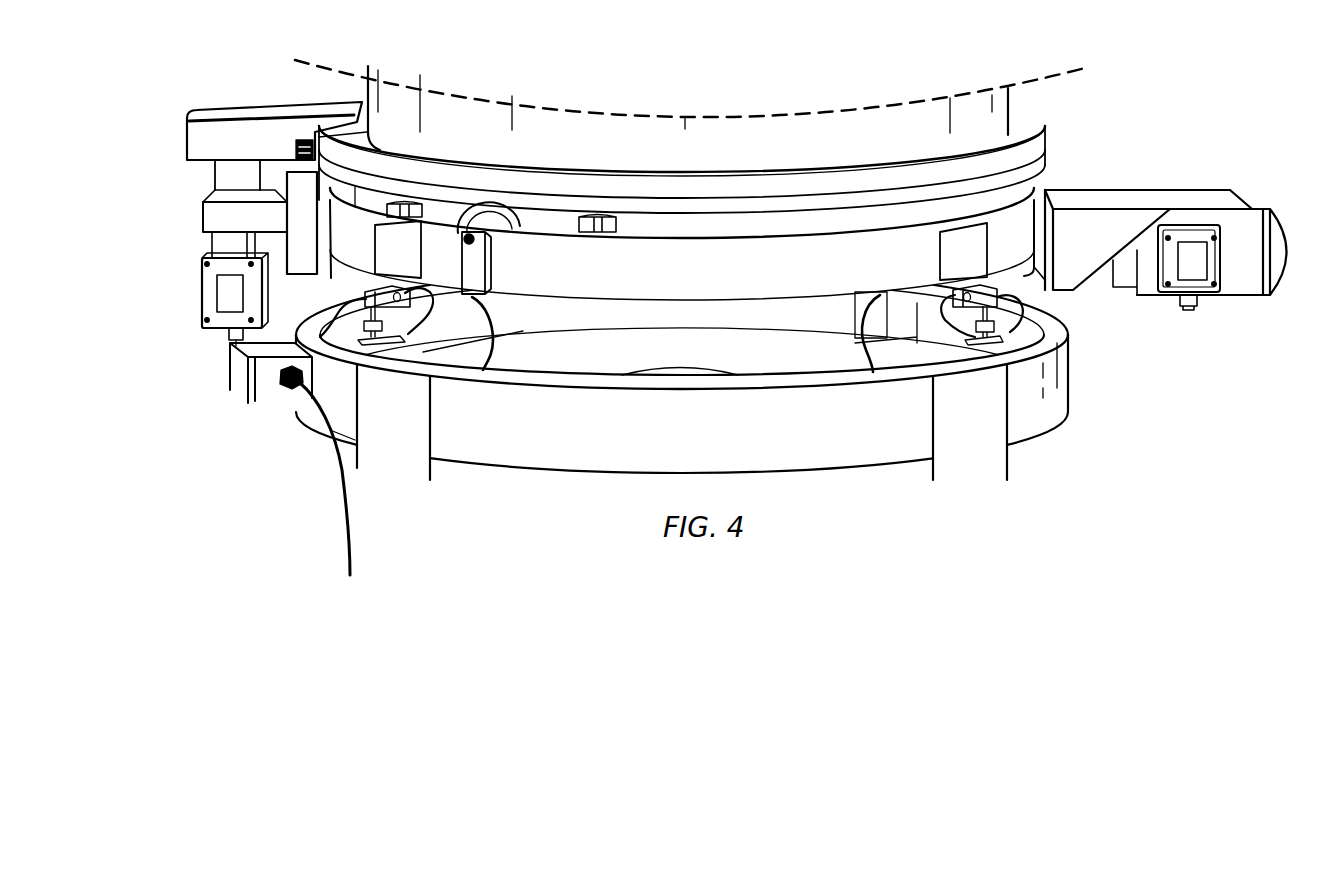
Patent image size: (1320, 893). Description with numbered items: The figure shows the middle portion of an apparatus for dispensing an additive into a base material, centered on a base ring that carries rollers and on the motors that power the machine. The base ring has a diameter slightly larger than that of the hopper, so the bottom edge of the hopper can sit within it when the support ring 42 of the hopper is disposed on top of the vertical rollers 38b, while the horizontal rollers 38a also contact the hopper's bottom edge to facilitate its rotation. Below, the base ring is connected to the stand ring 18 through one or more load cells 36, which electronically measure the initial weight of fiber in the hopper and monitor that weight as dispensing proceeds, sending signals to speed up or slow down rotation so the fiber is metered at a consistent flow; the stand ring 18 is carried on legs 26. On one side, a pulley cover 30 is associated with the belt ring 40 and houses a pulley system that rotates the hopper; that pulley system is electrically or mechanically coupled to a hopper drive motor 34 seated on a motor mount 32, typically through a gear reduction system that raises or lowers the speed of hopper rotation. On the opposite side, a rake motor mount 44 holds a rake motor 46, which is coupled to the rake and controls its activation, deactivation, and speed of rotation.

The stand ring 18 is at (518, 438).
The support legs 26 is at (394, 423).
The pulley cover 30 is at (240, 110).
The motor mount 32 is at (298, 208).
The hopper drive motor 34 is at (207, 290).
The load cells 36 is at (392, 304).
The horizontal rollers 38a is at (425, 203).
The vertical rollers 38b is at (487, 213).
The belt ring 40 is at (793, 186).
The support ring 42 is at (1018, 171).
The rake motor mount 44 is at (1112, 201).
The rake motor 46 is at (1244, 275).